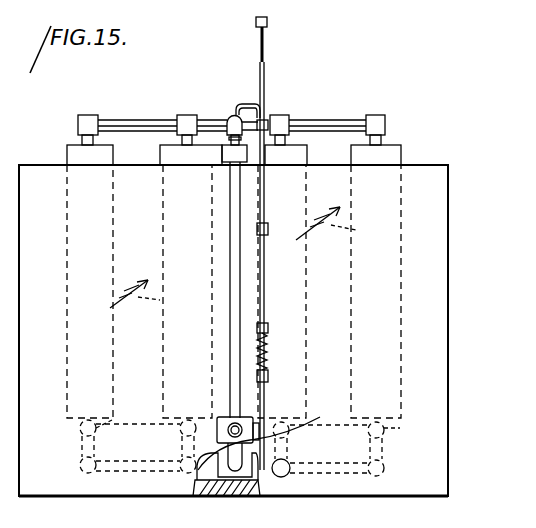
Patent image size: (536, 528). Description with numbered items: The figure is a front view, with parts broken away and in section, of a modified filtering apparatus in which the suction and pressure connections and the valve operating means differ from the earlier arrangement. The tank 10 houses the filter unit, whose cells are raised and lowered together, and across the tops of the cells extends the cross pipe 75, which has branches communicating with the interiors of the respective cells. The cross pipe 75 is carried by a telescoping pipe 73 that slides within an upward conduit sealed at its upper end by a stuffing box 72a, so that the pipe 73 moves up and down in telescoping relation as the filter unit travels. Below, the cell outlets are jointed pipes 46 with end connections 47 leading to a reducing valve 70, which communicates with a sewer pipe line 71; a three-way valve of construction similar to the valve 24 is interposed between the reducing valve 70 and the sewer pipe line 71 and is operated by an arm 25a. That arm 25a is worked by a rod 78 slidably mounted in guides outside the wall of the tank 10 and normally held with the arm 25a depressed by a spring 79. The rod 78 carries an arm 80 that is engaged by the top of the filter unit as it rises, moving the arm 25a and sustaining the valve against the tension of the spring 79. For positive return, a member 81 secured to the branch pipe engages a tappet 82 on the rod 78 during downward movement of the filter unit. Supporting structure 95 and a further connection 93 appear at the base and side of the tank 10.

The tank 10 is at (448, 200).
The valve 24 is at (222, 422).
The arm 25a is at (321, 416).
The pipe connections 46 is at (368, 445).
The pipe fittings 47 is at (262, 424).
The reducing valve 70 is at (211, 491).
The sewer pipe line 71 is at (241, 428).
The stuffing box 72a is at (226, 154).
The pipe 73 is at (228, 140).
The cross pipe 75 is at (326, 124).
The rod 78 is at (262, 292).
The spring 79 is at (268, 345).
The arm 80 is at (268, 22).
The member 81 is at (247, 110).
The tappet 82 is at (266, 118).
The conduit 93 is at (449, 526).
The support 95 is at (156, 516).